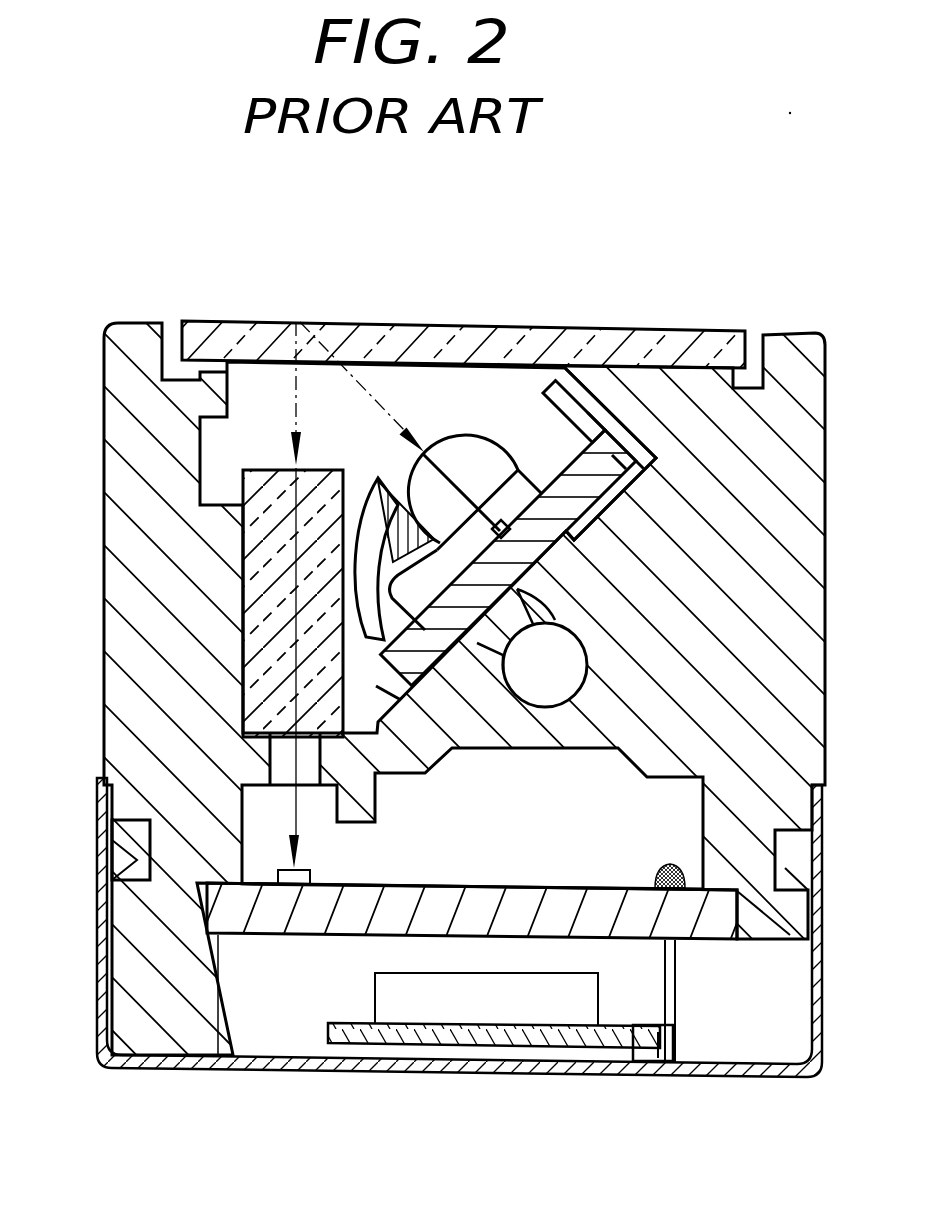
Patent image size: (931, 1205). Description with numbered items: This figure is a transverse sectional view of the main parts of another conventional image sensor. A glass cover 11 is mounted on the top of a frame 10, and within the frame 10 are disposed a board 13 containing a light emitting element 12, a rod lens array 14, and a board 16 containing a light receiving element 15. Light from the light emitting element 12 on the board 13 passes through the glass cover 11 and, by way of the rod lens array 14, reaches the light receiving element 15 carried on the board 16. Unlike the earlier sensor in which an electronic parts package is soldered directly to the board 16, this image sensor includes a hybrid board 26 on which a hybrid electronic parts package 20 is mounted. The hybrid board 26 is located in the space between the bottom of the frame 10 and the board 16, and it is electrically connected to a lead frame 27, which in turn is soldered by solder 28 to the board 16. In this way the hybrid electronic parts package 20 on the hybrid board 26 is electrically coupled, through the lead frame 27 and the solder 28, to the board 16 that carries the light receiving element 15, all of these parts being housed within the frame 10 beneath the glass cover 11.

The frame 10 is at (130, 535).
The glass cover 11 is at (410, 326).
The light emitting element 12 is at (514, 514).
The board 13 is at (640, 440).
The rod lens array 14 is at (252, 663).
The light receiving element 15 is at (308, 878).
The board 16 is at (426, 902).
The hybrid electronic parts package 20 is at (400, 993).
The hybrid board 26 is at (530, 1048).
The lead frame 27 is at (677, 968).
The solder 28 is at (662, 869).